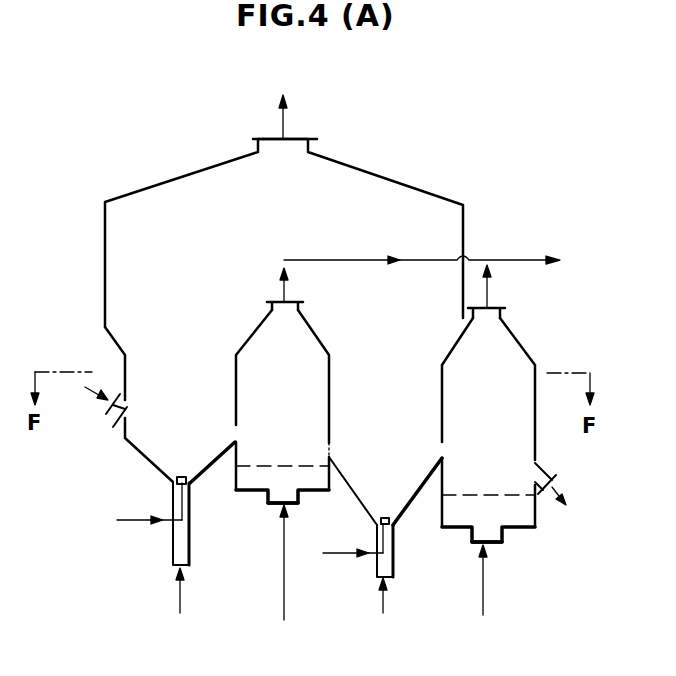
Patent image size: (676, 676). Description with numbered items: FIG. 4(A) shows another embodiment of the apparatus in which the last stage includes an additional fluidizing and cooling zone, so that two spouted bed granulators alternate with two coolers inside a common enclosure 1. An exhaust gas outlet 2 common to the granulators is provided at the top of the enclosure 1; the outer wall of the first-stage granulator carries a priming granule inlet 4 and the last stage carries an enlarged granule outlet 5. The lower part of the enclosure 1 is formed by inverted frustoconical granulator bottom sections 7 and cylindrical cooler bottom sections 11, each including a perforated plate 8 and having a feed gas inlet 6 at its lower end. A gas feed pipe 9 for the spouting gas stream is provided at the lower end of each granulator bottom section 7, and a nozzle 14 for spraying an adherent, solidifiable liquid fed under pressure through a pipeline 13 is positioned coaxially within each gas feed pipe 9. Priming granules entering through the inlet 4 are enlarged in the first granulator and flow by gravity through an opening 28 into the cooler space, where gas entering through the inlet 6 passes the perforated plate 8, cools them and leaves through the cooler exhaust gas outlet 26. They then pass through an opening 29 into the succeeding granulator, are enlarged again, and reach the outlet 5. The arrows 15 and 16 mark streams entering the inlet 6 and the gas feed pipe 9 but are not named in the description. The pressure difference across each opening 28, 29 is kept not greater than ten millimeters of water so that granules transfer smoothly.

The enclosure 1 is at (206, 163).
The exhaust gas outlet 2 is at (270, 138).
The priming granule inlet 4 is at (116, 420).
The enlarged granule outlet 5 is at (553, 474).
The feed gas inlet 6 is at (300, 495).
The granulator bottom section 7 is at (153, 465).
The perforated plate 8 is at (257, 463).
The gas feed pipe 9 is at (173, 550).
The cooler bottom section 11 is at (252, 492).
The pipeline 13 is at (143, 523).
The nozzle 14 is at (181, 477).
The fluidizing gas supply 15 is at (284, 577).
The carrier gas supply 16 is at (180, 603).
The exhaust gas outlet 26 is at (303, 308).
The opening 28 is at (237, 430).
The opening 29 is at (328, 448).